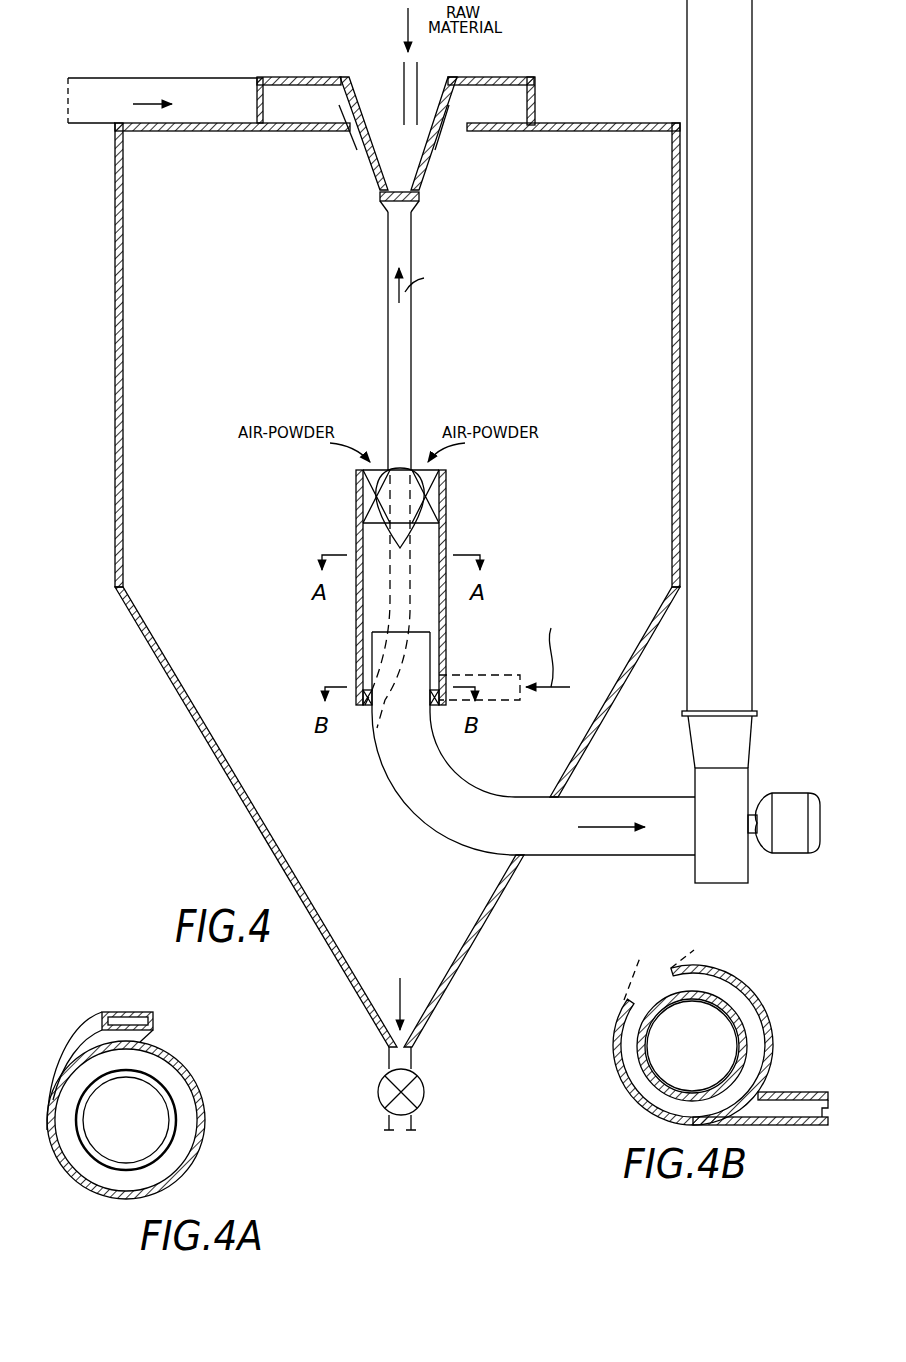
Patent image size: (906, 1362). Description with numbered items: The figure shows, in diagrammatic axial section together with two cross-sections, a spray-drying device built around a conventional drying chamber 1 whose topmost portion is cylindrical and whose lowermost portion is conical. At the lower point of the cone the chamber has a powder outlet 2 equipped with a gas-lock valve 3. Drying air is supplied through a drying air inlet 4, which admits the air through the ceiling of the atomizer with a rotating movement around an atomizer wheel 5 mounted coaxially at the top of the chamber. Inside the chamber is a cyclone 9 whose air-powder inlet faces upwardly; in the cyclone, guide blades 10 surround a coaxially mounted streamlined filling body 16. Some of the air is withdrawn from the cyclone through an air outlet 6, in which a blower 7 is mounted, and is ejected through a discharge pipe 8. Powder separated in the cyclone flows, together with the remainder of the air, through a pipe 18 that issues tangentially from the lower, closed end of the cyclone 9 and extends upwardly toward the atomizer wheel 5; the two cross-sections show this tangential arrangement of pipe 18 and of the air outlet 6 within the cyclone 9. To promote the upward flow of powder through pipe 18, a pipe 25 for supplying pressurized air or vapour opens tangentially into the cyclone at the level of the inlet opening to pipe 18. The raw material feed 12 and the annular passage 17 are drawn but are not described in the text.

In FIG. 4, the drying chamber 1 is at (115, 364).
In FIG. 4, the powder outlet 2 is at (410, 1061).
In FIG. 4, the gas-lock valve 3 is at (422, 1093).
In FIG. 4, the drying air inlet 4 is at (166, 83).
In FIG. 4, the atomizer wheel 5 is at (413, 198).
In FIG. 4, the air outlet 6 is at (561, 843).
In FIG. 4A, the air outlet 6 is at (168, 1107).
In FIG. 4B, the air outlet 6 is at (738, 1037).
In FIG. 4, the blower 7 is at (742, 875).
In FIG. 4, the discharge pipe 8 is at (745, 645).
In FIG. 4, the cyclone 9 is at (370, 619).
In FIG. 4A, the cyclone 9 is at (200, 1092).
In FIG. 4B, the cyclone 9 is at (770, 1027).
In FIG. 4, the guide blades 10 is at (362, 502).
In FIG. 4, the raw material feed pipe 12 is at (417, 84).
In FIG. 4, the streamlined filling body 16 is at (405, 514).
In FIG. 4, the annular passage 17 is at (432, 660).
In FIG. 4, the pipe 18 is at (400, 350).
In FIG. 4A, the pipe 18 is at (152, 1018).
In FIG. 4B, the pipe 18 is at (651, 964).
In FIG. 4, the pipe for supplying pressurized air or vapour 25 is at (482, 698).
In FIG. 4B, the pipe for supplying pressurized air or vapour 25 is at (825, 1112).